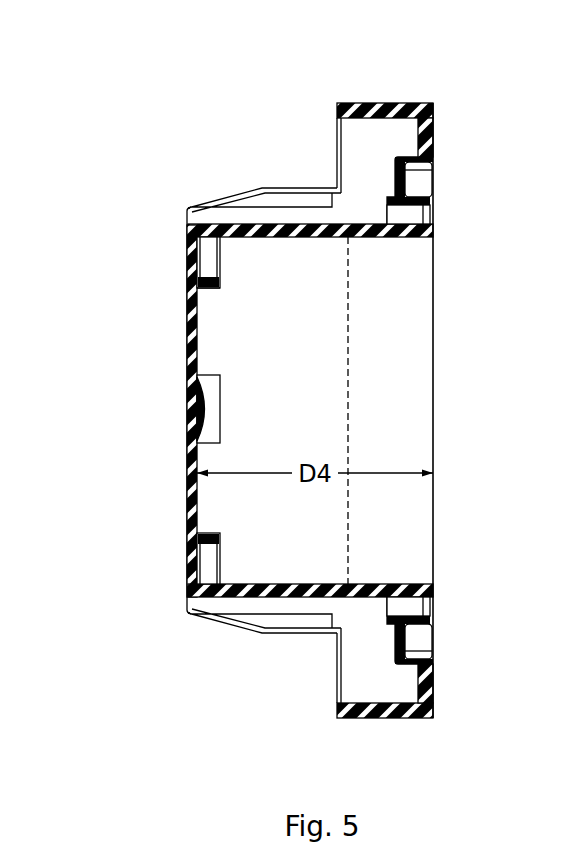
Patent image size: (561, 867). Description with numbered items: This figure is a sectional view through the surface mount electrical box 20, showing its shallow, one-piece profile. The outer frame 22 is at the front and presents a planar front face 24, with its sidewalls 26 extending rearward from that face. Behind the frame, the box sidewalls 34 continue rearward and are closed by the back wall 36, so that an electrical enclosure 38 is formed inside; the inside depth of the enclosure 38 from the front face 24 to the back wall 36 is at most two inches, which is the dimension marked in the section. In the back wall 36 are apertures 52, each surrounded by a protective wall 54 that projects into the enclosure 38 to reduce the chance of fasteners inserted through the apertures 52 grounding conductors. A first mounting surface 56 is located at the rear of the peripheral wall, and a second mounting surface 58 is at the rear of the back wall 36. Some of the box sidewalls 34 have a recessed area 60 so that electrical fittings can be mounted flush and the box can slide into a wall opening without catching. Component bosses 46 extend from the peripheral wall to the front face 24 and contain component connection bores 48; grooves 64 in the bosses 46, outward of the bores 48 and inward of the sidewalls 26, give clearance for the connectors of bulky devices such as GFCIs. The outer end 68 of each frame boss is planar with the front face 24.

The surface mount electrical box 20 is at (176, 160).
The outer frame 22 is at (393, 718).
The front face 24 is at (435, 400).
The sidewalls 26 is at (377, 394).
The box sidewalls 34 is at (263, 394).
The back wall 36 is at (188, 327).
The electrical enclosure 38 is at (395, 338).
The component bosses 46 is at (428, 198).
The component connection bores 48 is at (427, 213).
The apertures 52 is at (193, 253).
The protective wall 54 is at (221, 290).
The first mounting surface 56 is at (337, 153).
The second mounting surface 58 is at (188, 428).
The recessed areas 60 is at (268, 622).
The grooves 64 is at (417, 183).
The outer end 68 is at (433, 607).